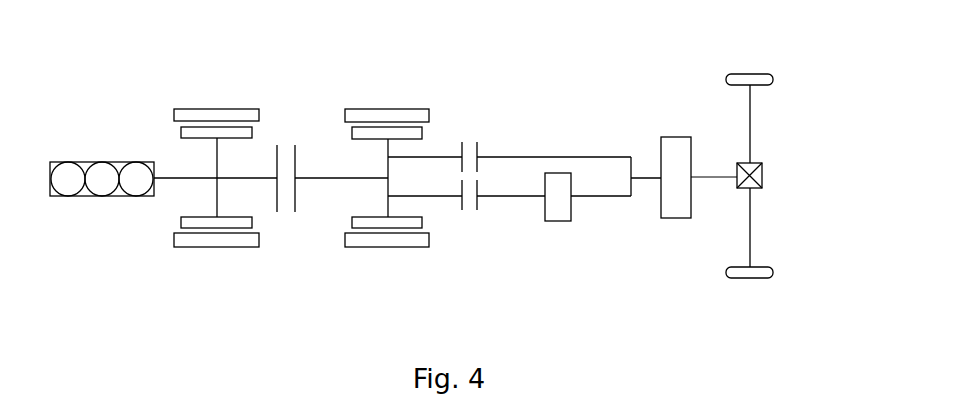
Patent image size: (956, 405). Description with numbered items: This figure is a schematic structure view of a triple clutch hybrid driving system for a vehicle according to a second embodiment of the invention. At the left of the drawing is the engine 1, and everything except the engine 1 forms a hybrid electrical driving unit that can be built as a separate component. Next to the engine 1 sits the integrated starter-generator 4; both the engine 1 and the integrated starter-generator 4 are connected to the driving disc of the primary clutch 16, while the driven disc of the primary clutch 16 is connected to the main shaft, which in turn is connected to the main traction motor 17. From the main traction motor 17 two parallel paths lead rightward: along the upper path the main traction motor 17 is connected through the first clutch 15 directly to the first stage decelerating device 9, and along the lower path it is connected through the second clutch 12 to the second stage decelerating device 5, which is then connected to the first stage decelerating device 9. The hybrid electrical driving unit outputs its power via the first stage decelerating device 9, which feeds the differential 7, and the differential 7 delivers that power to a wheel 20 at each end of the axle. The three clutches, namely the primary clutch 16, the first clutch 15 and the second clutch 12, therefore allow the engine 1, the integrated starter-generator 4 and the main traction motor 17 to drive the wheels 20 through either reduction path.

The engine 1 is at (107, 196).
The integrated starter-generator 4 is at (212, 108).
The primary clutch 16 is at (285, 143).
The main traction motor 17 is at (387, 108).
The first clutch 15 is at (472, 138).
The second clutch 12 is at (465, 213).
The second stage decelerating device 5 is at (558, 222).
The first stage decelerating device 9 is at (676, 133).
The differential 7 is at (763, 176).
The wheel 20 is at (773, 78).